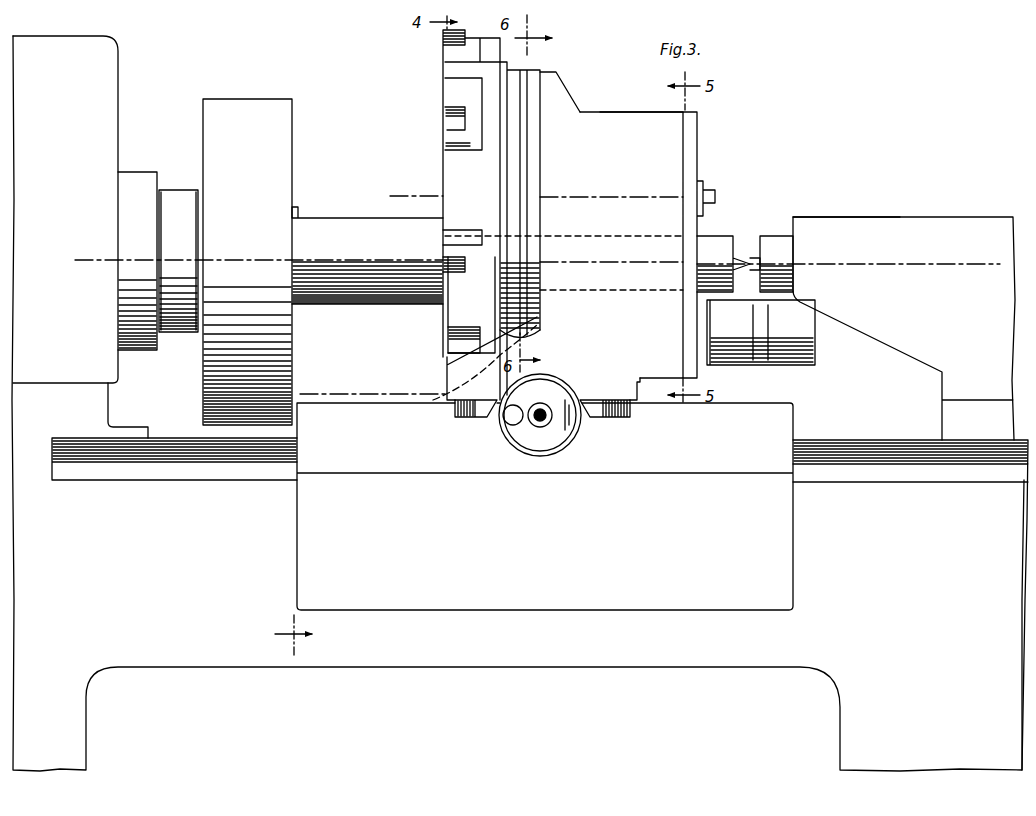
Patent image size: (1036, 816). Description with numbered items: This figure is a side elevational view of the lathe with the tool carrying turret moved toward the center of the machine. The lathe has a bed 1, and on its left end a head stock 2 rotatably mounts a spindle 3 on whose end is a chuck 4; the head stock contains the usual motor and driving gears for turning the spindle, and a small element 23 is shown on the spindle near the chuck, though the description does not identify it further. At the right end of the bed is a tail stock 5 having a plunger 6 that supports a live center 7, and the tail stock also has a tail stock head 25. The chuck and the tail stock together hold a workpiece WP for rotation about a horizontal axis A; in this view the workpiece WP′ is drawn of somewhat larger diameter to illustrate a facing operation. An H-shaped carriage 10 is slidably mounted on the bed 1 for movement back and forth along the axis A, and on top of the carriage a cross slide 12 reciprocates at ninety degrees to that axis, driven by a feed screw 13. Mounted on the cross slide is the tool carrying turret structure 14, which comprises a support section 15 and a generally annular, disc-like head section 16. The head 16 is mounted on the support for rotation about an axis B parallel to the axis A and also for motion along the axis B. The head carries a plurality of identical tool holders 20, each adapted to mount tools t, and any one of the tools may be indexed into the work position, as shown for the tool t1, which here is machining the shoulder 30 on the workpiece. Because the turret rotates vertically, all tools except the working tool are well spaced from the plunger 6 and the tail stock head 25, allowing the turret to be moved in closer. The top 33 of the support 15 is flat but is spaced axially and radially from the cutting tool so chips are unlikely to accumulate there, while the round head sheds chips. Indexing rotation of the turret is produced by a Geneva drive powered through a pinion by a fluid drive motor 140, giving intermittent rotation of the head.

The bed 1 is at (230, 668).
The head stock 2 is at (121, 72).
The spindle 3 is at (198, 188).
The chuck 4 is at (262, 98).
The tail stock 5 is at (914, 216).
The plunger 6 is at (774, 236).
The live center 7 is at (750, 258).
The carriage 10 is at (799, 424).
The cross slide 12 is at (446, 400).
The feed screw 13 is at (530, 428).
The tool carrying turret structure 14 is at (598, 122).
The support section 15 is at (557, 72).
The head section 16 is at (455, 68).
The tool holders 20 is at (455, 88).
The shaft 23 is at (299, 210).
The tail stock head 25 is at (800, 216).
The shoulder 30 is at (456, 286).
The top of the support 33 is at (660, 112).
The fluid drive motor 140 is at (800, 361).
The tools t is at (448, 330).
The tool in work position t1 is at (440, 265).
The workpiece WP is at (366, 165).
The axis A is at (942, 262).
The axis B is at (423, 196).